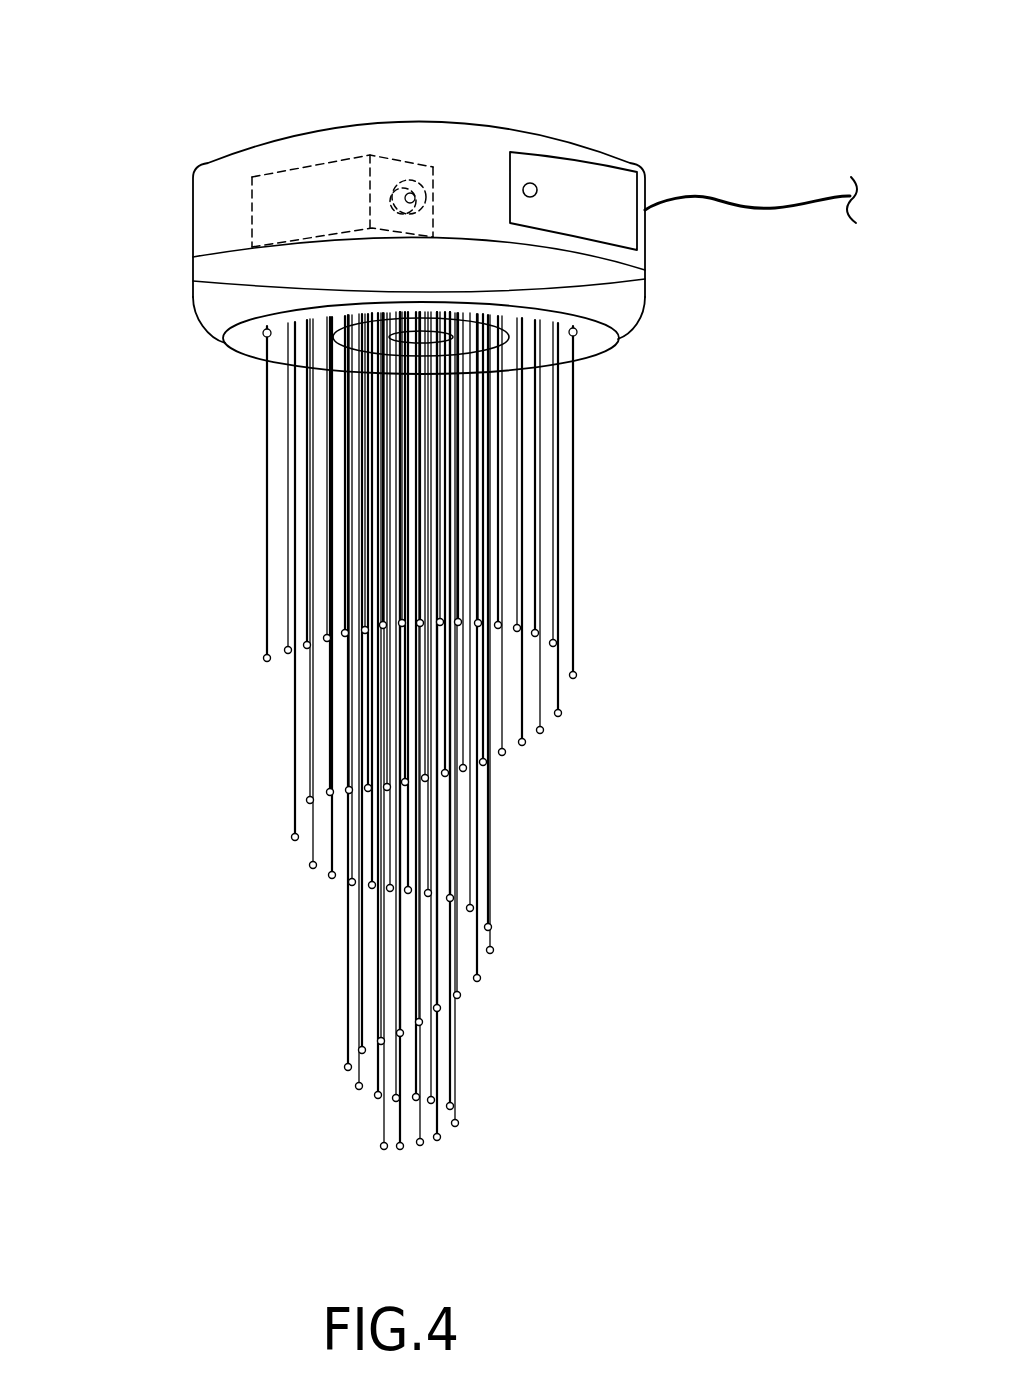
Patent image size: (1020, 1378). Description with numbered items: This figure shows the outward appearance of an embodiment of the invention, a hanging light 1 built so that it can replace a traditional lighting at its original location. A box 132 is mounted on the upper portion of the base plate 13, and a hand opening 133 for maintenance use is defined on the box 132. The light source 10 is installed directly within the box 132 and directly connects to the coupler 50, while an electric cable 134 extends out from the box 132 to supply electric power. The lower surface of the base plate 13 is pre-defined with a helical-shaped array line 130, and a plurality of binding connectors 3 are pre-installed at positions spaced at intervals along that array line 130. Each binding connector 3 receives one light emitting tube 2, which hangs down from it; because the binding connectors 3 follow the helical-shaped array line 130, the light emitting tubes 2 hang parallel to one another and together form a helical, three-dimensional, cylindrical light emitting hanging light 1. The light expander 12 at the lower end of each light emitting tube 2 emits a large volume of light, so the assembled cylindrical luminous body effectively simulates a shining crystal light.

The hanging light 1 is at (207, 693).
The light emitting tube 2 is at (573, 475).
The binding connector 3 is at (297, 311).
The light source 10 is at (303, 197).
The light expander 12 is at (575, 677).
The base plate 13 is at (607, 307).
The coupler 50 is at (405, 190).
The helical-shaped array line 130 is at (297, 310).
The box 132 is at (609, 142).
The hand opening 133 is at (543, 152).
The electric cable 134 is at (765, 205).